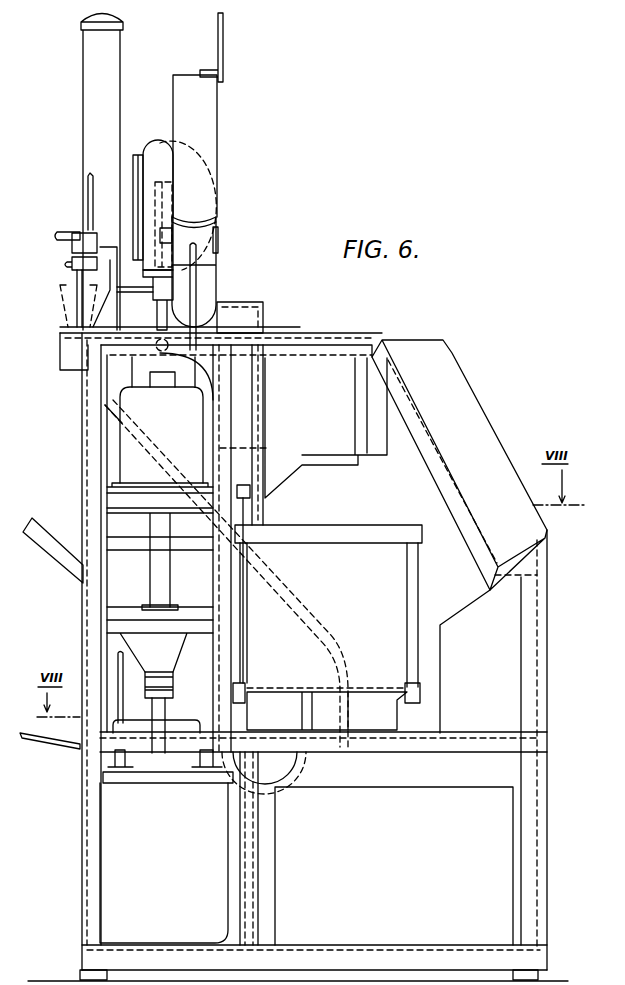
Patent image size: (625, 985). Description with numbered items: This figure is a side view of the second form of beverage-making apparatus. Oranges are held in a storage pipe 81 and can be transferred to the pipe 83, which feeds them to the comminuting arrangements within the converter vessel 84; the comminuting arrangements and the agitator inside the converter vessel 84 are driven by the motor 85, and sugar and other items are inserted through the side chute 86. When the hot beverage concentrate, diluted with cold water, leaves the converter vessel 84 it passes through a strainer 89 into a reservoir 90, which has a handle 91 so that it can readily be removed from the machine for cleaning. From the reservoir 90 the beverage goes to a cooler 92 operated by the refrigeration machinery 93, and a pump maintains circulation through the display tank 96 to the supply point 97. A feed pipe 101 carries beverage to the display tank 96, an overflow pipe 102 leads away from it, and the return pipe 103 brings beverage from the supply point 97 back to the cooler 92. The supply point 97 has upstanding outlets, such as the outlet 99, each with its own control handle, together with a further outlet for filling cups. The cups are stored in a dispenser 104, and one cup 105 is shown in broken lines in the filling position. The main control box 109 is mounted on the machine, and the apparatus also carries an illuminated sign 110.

The pipe 81 is at (203, 193).
The pipe 83 is at (265, 328).
The converter vessel 84 is at (127, 635).
The motor 85 is at (133, 413).
The side chute 86 is at (55, 547).
The strainer 89 is at (147, 762).
The reservoir 90 is at (105, 867).
The handle 91 is at (43, 737).
The cooler 92 is at (393, 605).
The refrigeration machinery 93 is at (503, 813).
The display tank 96 is at (159, 143).
The supply point 97 is at (62, 250).
The outlet 99 is at (90, 208).
The feed pipe 101 is at (167, 183).
The overflow pipe 102 is at (153, 212).
The return pipe 103 is at (157, 462).
The dispenser 104 is at (90, 68).
The cup 105 is at (63, 300).
The main control box 109 is at (515, 697).
The illuminated sign 110 is at (503, 470).